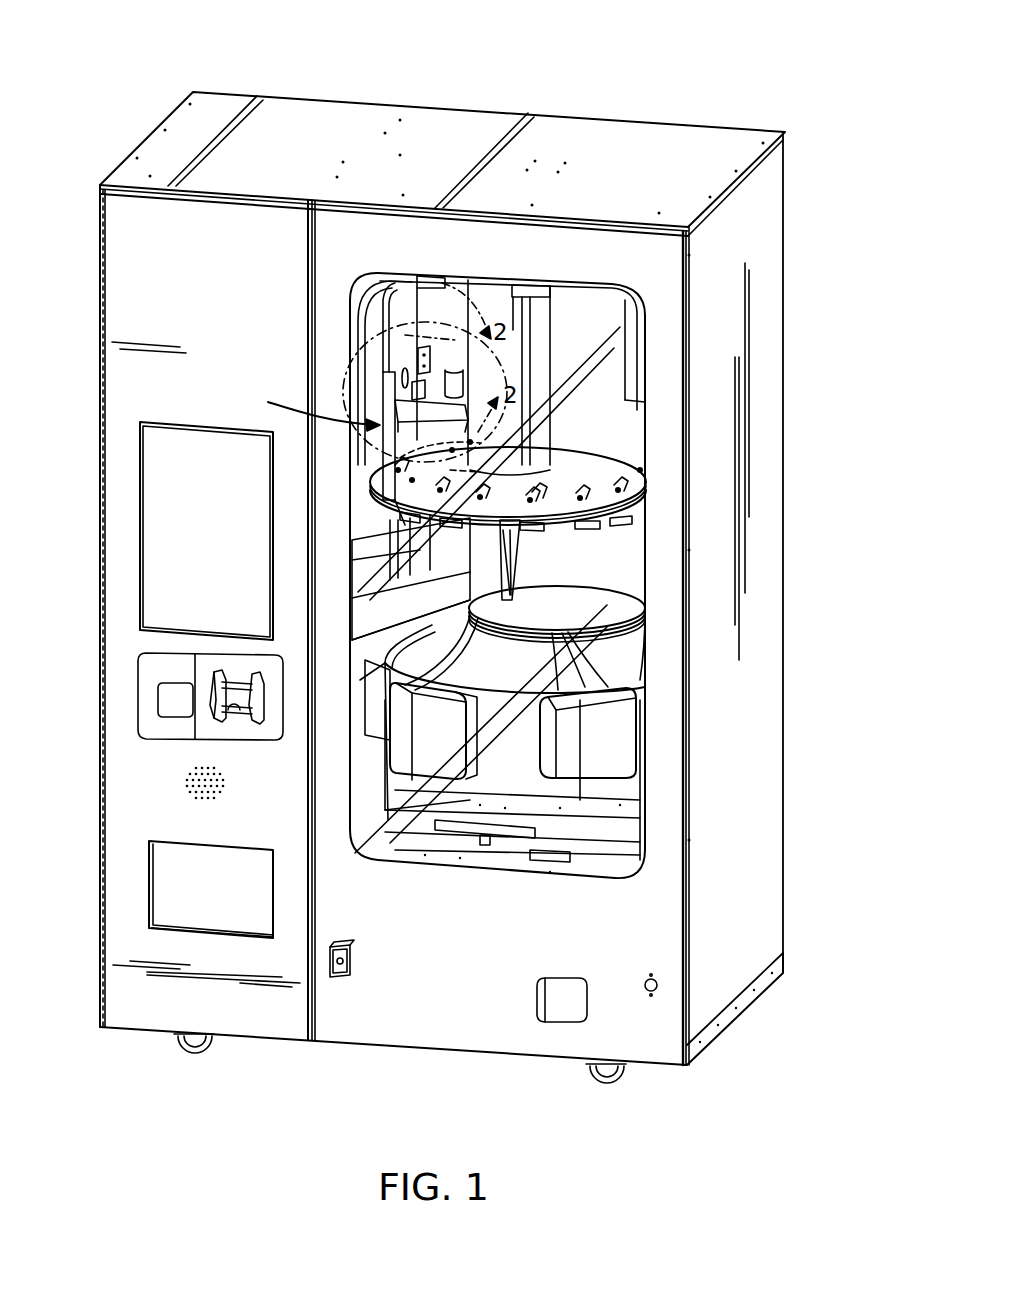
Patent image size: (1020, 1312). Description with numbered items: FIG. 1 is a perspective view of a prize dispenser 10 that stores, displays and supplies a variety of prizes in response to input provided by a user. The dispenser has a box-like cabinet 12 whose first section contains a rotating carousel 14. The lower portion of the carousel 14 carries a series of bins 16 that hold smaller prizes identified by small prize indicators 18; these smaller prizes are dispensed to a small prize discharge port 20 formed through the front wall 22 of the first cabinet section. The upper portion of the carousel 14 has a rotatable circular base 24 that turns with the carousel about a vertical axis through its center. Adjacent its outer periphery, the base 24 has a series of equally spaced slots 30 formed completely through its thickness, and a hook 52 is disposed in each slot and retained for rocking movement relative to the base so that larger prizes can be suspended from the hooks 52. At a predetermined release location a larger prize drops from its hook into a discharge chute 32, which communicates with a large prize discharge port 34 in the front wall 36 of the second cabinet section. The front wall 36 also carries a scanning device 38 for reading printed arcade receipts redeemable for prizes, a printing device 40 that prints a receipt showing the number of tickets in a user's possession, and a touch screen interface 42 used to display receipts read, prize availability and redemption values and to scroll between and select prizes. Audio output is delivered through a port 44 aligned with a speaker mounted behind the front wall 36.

The prize dispenser 10 is at (617, 60).
The cabinet 12 is at (775, 198).
The rotating carousel 14 is at (600, 563).
The bins 16 is at (608, 672).
The small prize indicators 18 is at (613, 742).
The small prize discharge port 20 is at (565, 1003).
The front wall 22 is at (432, 1008).
The rotatable circular base 24 is at (640, 457).
The slots 30 is at (507, 520).
The discharge chute 32 is at (424, 604).
The large prize discharge port 34 is at (168, 899).
The front wall 36 is at (143, 998).
The scanning device 38 is at (165, 703).
The printing device 40 is at (237, 700).
The touch screen interface 42 is at (167, 570).
The port 44 is at (190, 782).
The hooks 52 is at (542, 498).